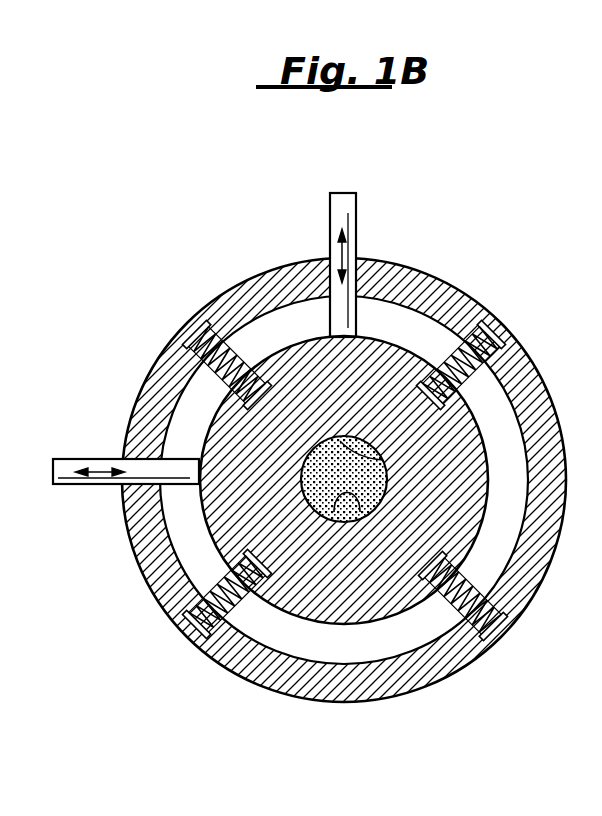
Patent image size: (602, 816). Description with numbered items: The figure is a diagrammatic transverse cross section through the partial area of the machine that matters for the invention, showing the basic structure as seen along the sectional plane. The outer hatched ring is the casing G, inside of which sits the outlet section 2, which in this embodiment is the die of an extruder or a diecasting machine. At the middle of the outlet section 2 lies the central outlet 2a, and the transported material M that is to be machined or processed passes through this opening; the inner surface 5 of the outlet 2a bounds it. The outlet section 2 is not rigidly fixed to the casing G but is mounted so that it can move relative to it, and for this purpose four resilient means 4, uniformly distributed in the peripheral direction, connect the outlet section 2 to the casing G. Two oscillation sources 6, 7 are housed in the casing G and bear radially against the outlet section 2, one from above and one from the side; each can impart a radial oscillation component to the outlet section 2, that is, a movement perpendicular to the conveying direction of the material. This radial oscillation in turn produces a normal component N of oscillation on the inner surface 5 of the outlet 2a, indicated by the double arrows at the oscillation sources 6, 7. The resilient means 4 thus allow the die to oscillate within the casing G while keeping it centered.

The outlet section 2 is at (279, 622).
The central outlet 2a is at (360, 512).
The resilient means 4 is at (215, 352).
The inner surface 5 is at (386, 457).
The oscillation source 6 is at (348, 218).
The oscillation source 7 is at (66, 484).
The casing G is at (557, 394).
The transported material M is at (330, 468).
The normal component N is at (332, 256).